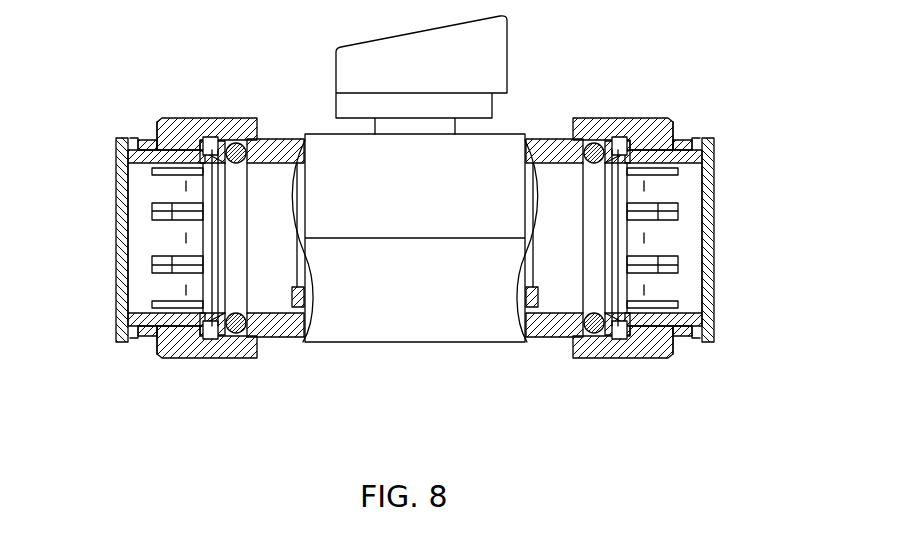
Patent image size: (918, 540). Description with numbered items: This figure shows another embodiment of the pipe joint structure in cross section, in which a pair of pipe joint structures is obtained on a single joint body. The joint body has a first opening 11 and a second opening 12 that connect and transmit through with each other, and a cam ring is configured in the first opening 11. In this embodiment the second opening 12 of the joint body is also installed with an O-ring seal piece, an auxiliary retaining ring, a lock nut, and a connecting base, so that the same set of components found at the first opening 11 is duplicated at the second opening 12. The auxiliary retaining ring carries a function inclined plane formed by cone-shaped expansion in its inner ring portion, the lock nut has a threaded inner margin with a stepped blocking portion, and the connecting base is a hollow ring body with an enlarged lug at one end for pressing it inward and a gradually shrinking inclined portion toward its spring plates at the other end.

The first opening 11 is at (510, 307).
The second opening 12 is at (320, 307).